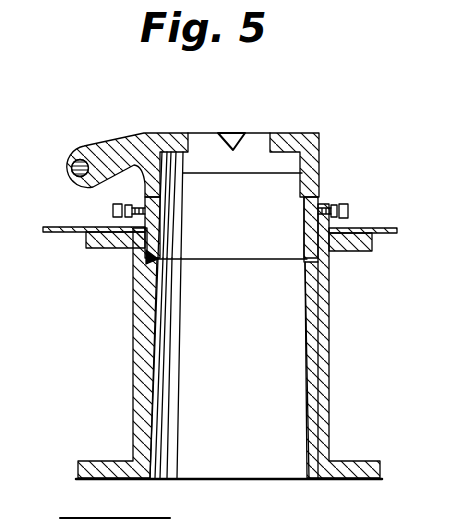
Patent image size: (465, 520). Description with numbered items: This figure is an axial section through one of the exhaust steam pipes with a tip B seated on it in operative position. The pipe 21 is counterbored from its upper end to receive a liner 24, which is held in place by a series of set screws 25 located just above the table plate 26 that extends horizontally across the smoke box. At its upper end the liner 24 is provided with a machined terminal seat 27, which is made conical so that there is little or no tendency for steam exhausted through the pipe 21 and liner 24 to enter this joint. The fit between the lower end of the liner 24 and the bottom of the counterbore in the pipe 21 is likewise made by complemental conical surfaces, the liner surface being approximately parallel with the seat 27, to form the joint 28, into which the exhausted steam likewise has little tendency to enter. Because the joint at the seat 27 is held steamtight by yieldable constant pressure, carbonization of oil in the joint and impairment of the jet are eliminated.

The cover B is at (319, 148).
The exhaust pipe 21 is at (322, 323).
The liner 24 is at (312, 197).
The set screws 25 is at (347, 210).
The table plate 26 is at (392, 228).
The terminal seat 27 is at (147, 177).
The joint 28 is at (152, 259).